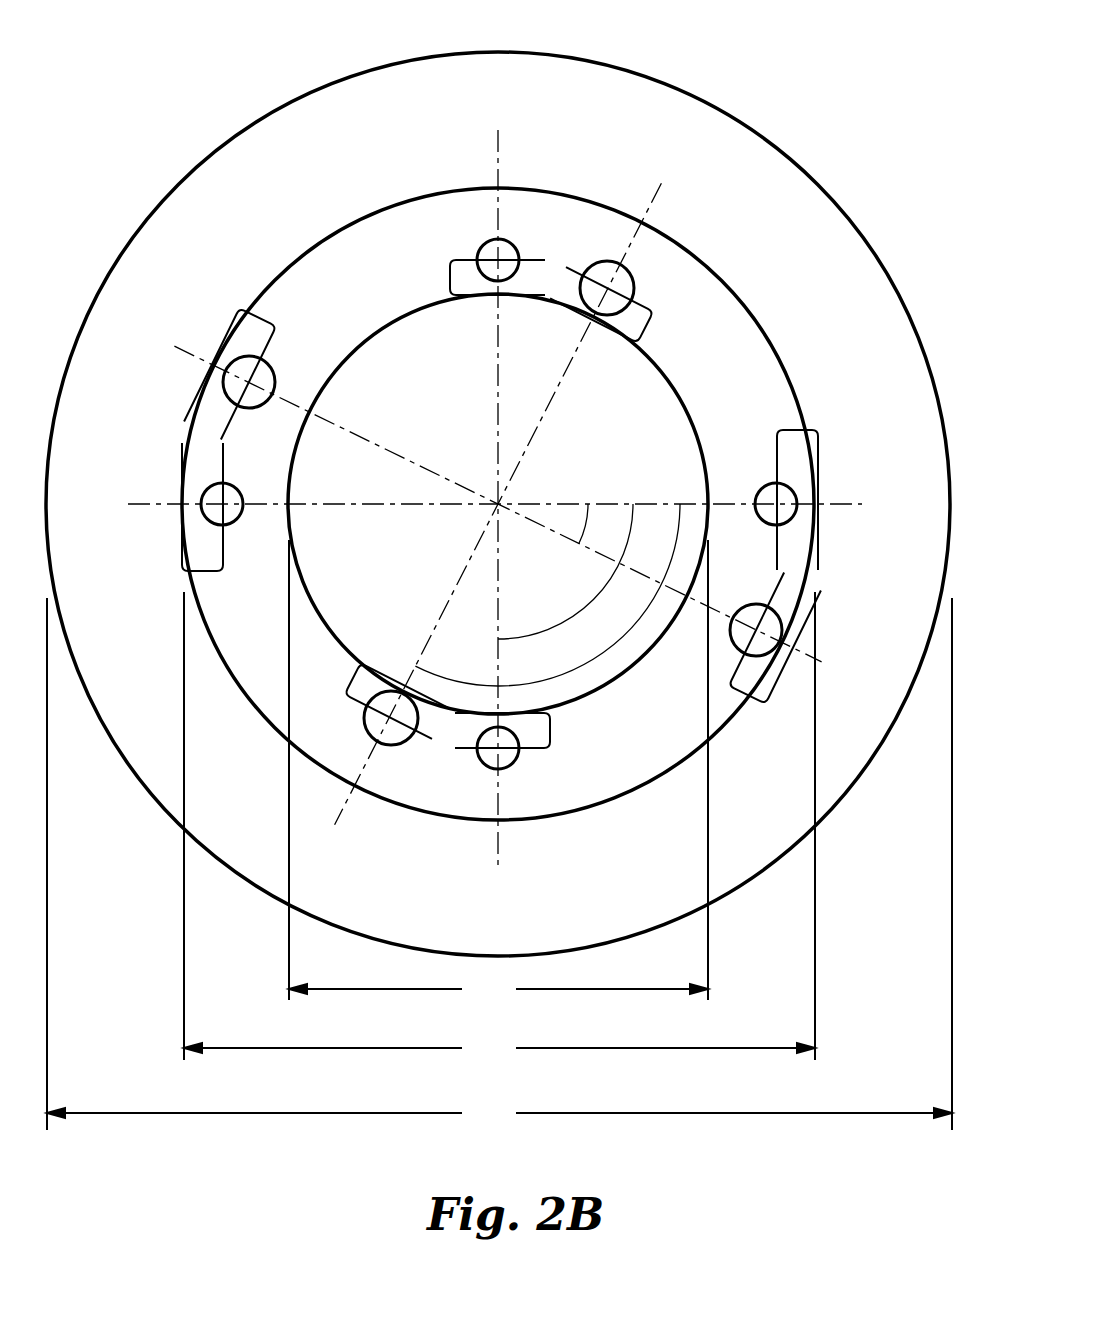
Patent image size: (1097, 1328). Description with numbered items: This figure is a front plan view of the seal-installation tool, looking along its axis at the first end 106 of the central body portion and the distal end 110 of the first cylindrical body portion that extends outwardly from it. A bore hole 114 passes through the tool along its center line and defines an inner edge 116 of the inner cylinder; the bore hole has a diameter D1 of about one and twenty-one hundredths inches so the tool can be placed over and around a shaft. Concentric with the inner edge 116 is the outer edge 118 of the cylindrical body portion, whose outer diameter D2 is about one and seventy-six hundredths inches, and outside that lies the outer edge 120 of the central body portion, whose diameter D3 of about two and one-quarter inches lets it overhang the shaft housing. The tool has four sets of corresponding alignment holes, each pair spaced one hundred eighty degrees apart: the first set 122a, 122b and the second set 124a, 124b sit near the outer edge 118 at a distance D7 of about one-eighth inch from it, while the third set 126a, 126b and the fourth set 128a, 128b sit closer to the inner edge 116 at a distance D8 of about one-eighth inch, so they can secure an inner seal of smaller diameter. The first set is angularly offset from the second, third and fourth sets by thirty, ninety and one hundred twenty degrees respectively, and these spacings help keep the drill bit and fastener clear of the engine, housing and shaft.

The first end 106 is at (237, 222).
The distal end 110 is at (321, 292).
The bore hole 114 is at (401, 356).
The inner edge 116 is at (680, 392).
The outer edge 118 is at (680, 238).
The outer edge 120 is at (673, 82).
The alignment hole 122a is at (243, 494).
The alignment hole 122b is at (756, 496).
The alignment hole 124a is at (277, 388).
The alignment hole 124b is at (781, 621).
The alignment hole 126a is at (513, 765).
The alignment hole 126b is at (483, 243).
The alignment hole 128a is at (395, 745).
The alignment hole 128b is at (598, 262).
The distance D7 is at (266, 325).
The distance D8 is at (448, 278).
The bore hole diameter D1 is at (498, 772).
The outer diameter D2 is at (499, 828).
The diameter D3 is at (499, 864).